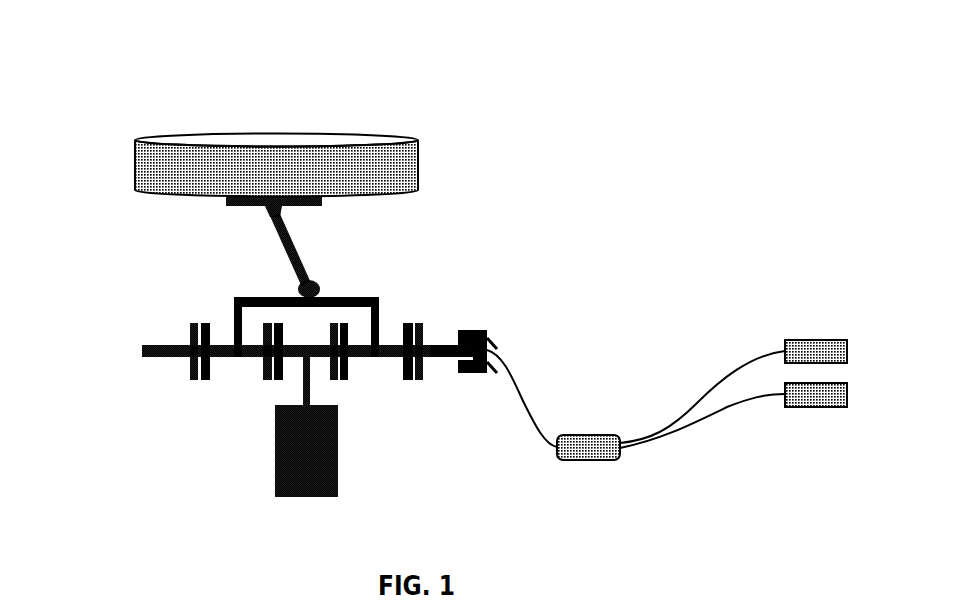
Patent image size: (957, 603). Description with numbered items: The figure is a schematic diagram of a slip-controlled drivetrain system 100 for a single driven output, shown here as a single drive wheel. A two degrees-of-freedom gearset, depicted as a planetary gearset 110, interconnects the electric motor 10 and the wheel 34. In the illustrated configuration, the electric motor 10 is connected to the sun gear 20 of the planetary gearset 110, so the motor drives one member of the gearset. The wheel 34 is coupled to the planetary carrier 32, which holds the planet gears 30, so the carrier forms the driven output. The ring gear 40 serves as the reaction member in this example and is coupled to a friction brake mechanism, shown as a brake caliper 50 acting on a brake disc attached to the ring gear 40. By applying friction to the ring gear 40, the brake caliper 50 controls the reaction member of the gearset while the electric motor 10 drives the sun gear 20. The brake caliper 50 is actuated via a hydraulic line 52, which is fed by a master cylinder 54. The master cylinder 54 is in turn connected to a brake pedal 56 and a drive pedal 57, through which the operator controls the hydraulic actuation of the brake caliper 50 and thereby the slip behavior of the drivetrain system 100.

The slip-controlled drivetrain system 100 is at (547, 120).
The planetary gearset 110 is at (145, 287).
The electric motor 10 is at (267, 457).
The sun gear 20 is at (312, 335).
The planet gears 30 is at (245, 380).
The planetary carrier 32 is at (263, 295).
The wheel 34 is at (125, 158).
The ring gear 40 is at (442, 330).
The brake caliper 50 is at (471, 320).
The hydraulic line 52 is at (540, 382).
The master cylinder 54 is at (610, 423).
The brake pedal 56 is at (843, 330).
The drive pedal 57 is at (827, 410).